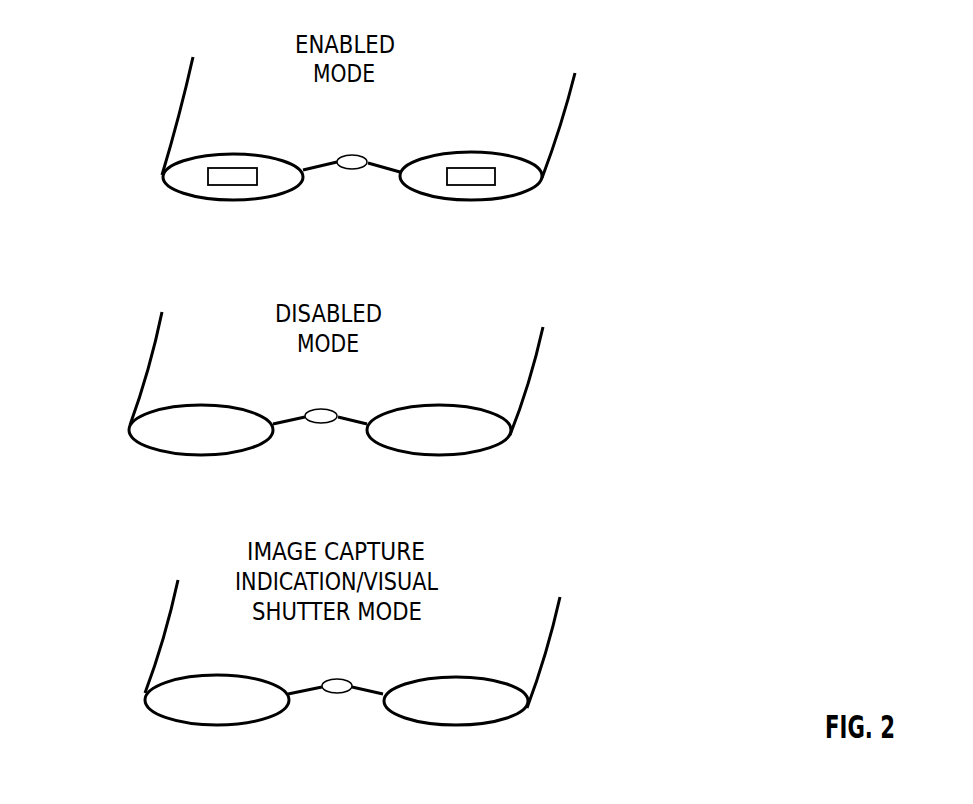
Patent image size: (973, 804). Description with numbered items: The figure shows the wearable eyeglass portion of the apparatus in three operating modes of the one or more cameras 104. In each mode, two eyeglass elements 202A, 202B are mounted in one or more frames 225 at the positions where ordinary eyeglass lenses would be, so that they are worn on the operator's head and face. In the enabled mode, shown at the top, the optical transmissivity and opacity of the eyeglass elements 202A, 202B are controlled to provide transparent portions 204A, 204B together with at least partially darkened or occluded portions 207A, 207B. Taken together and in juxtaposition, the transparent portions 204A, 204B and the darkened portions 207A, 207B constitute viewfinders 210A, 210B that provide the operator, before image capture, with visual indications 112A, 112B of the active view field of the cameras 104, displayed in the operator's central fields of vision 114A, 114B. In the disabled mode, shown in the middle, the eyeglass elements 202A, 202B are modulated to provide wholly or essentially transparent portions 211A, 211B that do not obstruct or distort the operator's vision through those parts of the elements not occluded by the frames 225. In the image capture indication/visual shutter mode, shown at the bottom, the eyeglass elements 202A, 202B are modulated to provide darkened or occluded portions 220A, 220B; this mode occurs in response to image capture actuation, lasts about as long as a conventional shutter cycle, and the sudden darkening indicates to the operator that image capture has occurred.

The camera 104 is at (347, 152).
The visual indication 112A is at (443, 182).
The visual indication 112B is at (205, 177).
The central field of vision 114A is at (487, 189).
The central field of vision 114B is at (233, 189).
The eyeglass element 202A is at (453, 153).
The eyeglass element 202B is at (208, 153).
The transparent portion 204A is at (473, 167).
The transparent portion 204B is at (232, 168).
The darkened portion 207A is at (510, 183).
The darkened portion 207B is at (273, 184).
The viewfinder 210A is at (463, 188).
The viewfinder 210B is at (221, 189).
The transparent portion 211A is at (478, 437).
The transparent portion 211B is at (192, 437).
The darkened portion 220A is at (495, 705).
The darkened portion 220B is at (208, 708).
The frame 225 is at (573, 85).